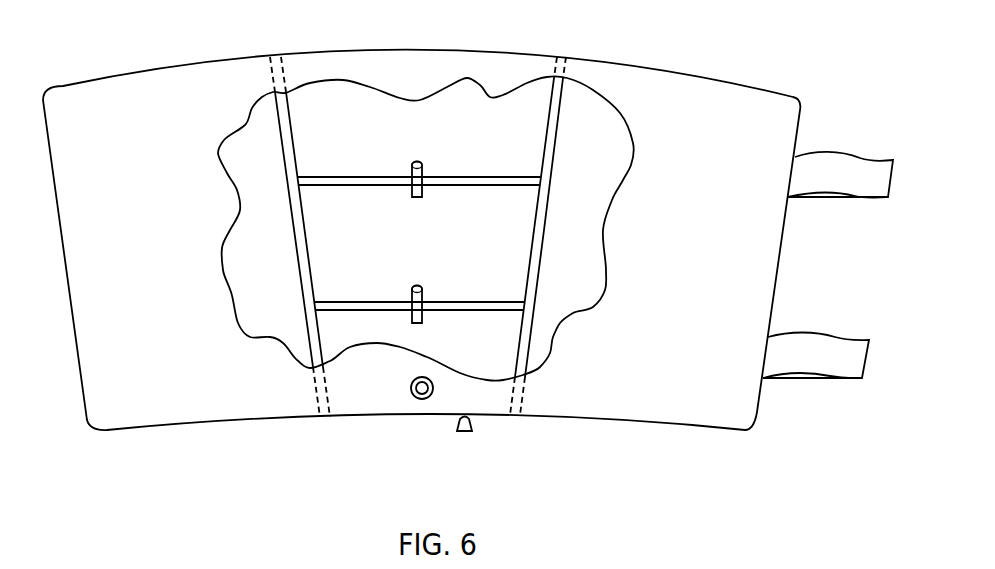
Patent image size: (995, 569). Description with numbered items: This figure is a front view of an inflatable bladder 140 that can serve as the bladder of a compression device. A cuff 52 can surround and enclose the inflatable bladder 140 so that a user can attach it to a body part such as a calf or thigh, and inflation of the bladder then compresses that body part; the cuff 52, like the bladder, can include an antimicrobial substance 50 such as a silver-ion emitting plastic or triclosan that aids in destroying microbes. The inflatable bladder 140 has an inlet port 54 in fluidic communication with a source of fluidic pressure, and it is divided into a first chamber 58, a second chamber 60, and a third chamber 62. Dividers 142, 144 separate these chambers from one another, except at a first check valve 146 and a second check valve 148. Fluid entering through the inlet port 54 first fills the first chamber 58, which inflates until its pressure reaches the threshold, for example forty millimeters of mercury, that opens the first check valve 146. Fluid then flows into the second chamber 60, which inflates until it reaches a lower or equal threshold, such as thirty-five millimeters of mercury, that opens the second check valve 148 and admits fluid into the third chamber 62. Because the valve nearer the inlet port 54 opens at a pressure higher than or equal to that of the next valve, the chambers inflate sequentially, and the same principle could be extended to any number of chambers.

The antimicrobial substance 50 is at (150, 100).
The cuff 52 is at (678, 68).
The inlet port 54 is at (408, 387).
The first chamber 58 is at (502, 343).
The second chamber 60 is at (342, 223).
The third chamber 62 is at (515, 112).
The inflatable bladder 140 is at (467, 431).
The divider 142 is at (397, 300).
The divider 144 is at (397, 175).
The first check valve 146 is at (417, 284).
The second check valve 148 is at (417, 159).